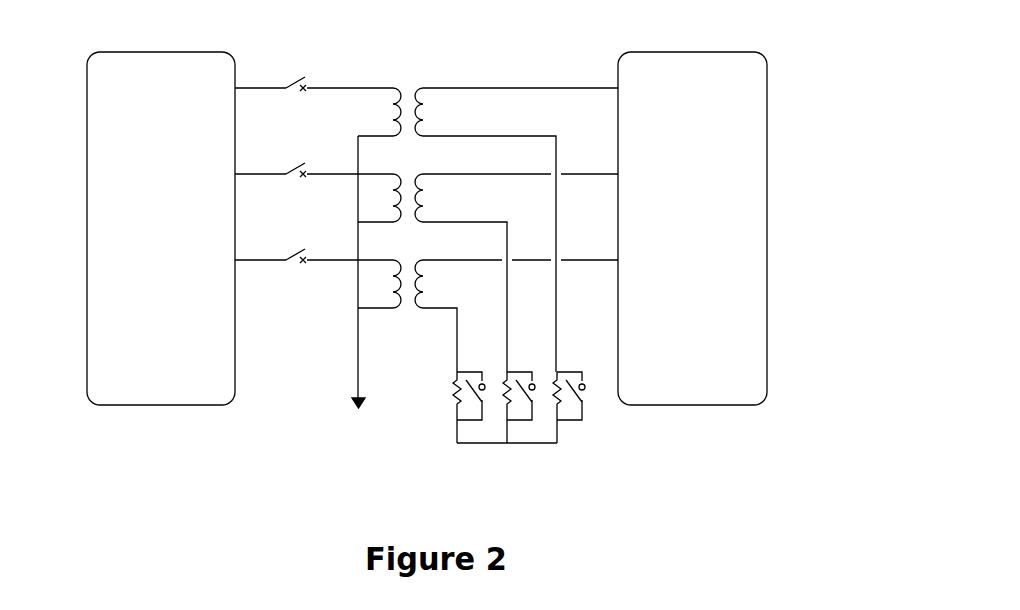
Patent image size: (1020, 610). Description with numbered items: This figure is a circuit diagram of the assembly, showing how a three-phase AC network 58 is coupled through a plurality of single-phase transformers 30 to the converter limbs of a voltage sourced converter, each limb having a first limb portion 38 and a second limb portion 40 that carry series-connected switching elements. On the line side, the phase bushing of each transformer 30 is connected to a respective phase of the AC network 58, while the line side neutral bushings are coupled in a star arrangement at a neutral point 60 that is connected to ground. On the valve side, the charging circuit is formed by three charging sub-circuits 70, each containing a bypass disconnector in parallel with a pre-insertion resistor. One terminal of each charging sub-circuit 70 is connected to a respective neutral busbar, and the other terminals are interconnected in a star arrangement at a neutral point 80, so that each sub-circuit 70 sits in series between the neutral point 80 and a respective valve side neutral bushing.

The three-phase AC network 58 is at (179, 239).
The first limb portion 38 is at (692, 228).
The second limb portion 40 is at (738, 242).
The single-phase transformer 30 is at (385, 111).
The neutral point 60 is at (369, 325).
The charging sub-circuit 70 is at (467, 370).
The neutral point 80 is at (514, 453).